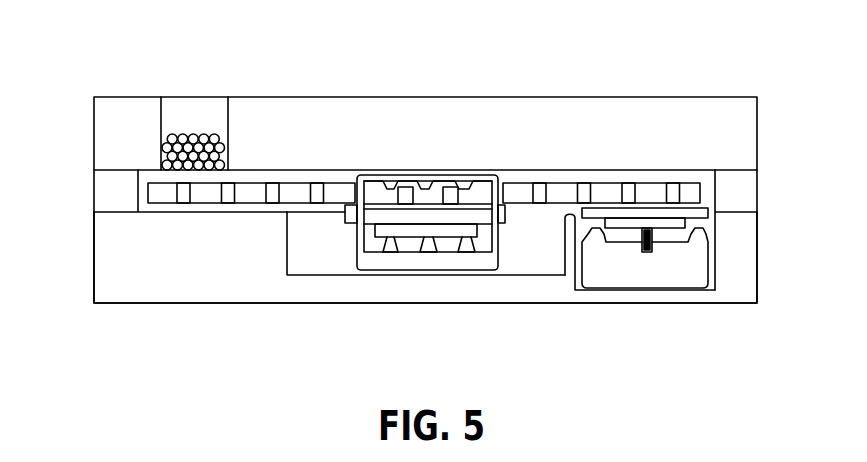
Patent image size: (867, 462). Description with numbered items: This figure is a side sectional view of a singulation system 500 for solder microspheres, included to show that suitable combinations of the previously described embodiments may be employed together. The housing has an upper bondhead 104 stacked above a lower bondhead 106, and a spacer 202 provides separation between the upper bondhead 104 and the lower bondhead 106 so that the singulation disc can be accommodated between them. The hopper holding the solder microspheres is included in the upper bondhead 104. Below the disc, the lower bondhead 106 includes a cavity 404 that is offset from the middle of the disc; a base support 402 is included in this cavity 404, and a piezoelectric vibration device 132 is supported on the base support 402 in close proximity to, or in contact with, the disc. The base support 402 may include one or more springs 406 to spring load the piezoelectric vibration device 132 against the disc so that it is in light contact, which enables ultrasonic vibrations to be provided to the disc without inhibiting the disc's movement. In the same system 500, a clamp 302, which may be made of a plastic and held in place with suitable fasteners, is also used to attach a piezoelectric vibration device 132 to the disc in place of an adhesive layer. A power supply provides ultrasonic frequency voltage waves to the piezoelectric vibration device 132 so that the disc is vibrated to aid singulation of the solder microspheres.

The singulation system 500 is at (737, 71).
The upper bondhead 104 is at (742, 133).
The spacer 202 is at (106, 194).
The lower bondhead 106 is at (740, 285).
The piezoelectric vibration device 132 is at (354, 233).
The clamp 302 is at (400, 260).
The cavity 404 is at (580, 263).
The base support 402 is at (622, 272).
The spring 406 is at (652, 247).